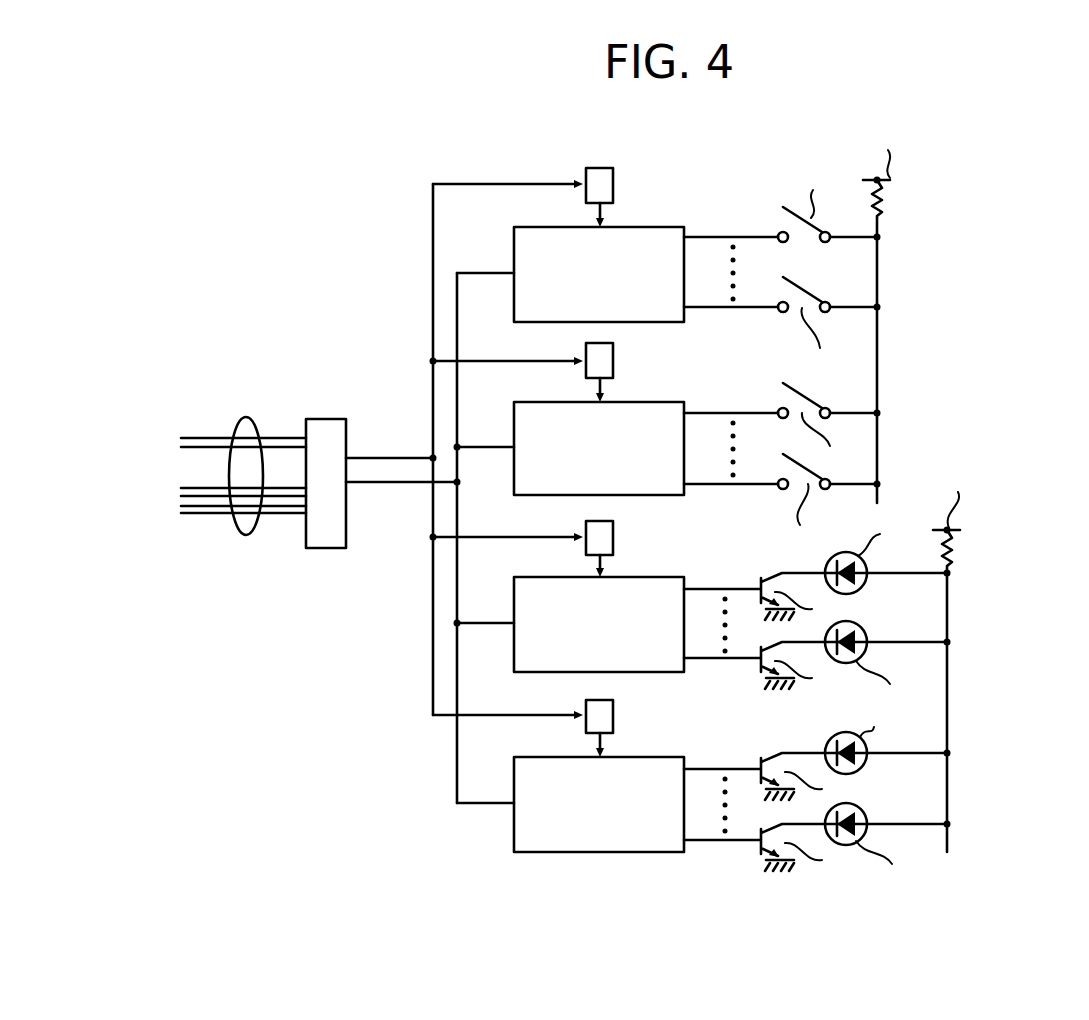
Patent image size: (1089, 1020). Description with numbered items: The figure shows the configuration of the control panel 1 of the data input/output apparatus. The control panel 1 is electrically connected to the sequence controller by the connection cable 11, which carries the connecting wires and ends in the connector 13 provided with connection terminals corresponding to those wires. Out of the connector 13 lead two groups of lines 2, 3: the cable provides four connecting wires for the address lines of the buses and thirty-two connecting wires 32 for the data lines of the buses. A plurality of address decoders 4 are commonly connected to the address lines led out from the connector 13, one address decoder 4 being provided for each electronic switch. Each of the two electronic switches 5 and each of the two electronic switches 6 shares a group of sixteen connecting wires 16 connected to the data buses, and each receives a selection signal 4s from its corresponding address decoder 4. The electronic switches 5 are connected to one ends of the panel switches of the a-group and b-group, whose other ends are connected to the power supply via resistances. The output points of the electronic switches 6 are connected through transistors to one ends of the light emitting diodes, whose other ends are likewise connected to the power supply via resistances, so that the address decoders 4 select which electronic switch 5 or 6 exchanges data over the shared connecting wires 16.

The control panel 1 is at (1042, 731).
The signal line (4-line harness) 2 is at (367, 452).
The signal line (32-line harness) 3 is at (368, 488).
The address decoder 4 is at (646, 701).
The selection signal 4s is at (640, 722).
The electronic switch 5 is at (722, 392).
The electronic switch 6 is at (712, 745).
The connection cable 11 is at (248, 417).
The connector 13 is at (328, 548).
The sixteen connecting wires for data buses 16 is at (495, 797).
The connecting wires for data lines 32 is at (400, 476).